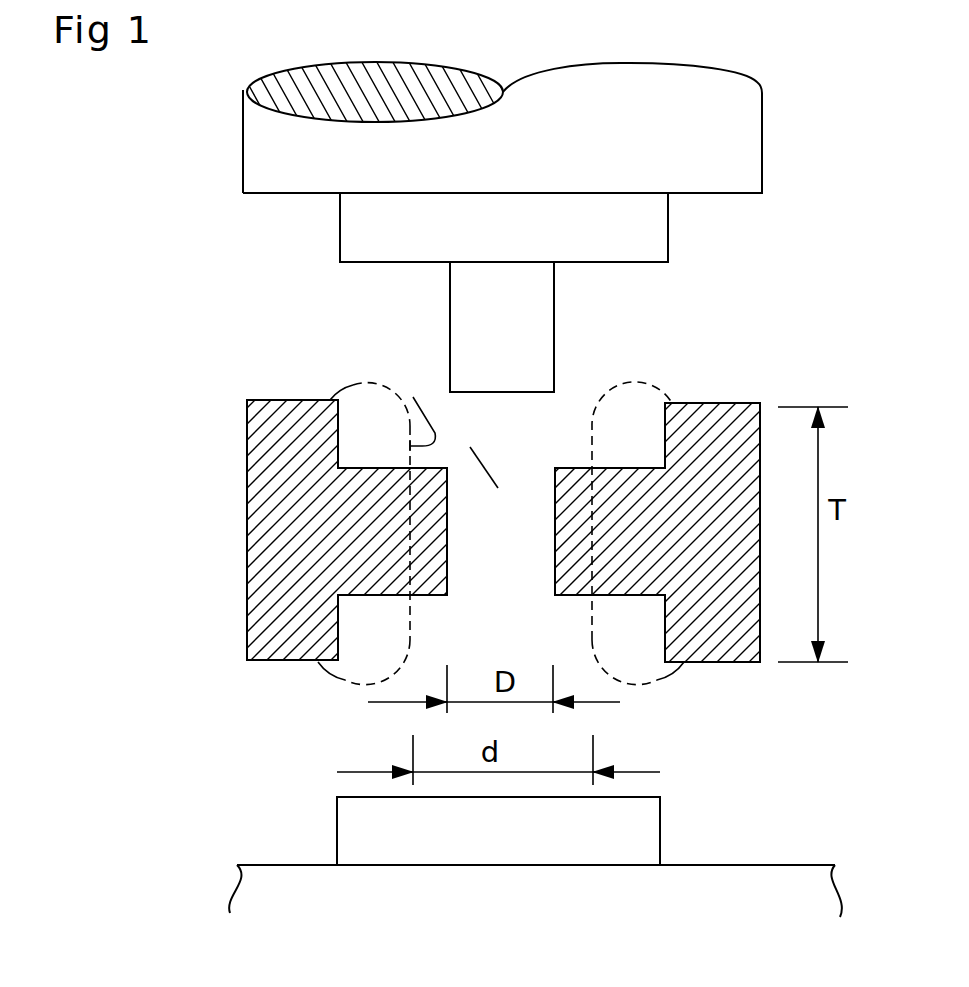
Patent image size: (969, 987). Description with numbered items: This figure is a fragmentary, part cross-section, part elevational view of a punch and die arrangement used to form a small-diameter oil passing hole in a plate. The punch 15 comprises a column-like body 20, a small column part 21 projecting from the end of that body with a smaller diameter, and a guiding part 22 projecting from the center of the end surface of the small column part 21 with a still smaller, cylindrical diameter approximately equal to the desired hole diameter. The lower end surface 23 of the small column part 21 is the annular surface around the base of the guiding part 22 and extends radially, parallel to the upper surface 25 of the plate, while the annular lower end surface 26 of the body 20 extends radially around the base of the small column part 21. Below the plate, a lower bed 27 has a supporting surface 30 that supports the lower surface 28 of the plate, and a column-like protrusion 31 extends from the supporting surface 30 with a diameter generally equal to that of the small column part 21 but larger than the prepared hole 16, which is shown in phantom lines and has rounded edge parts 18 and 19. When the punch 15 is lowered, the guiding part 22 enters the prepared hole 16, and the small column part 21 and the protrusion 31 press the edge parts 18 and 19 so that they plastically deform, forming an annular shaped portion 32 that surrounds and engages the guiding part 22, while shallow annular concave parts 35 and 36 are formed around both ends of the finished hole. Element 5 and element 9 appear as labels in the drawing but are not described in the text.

The punch 15 is at (486, 224).
The column-like body 20 is at (735, 160).
The small column part 21 is at (650, 222).
The guiding part 22 is at (532, 328).
The annular lower end surface of the punch body 26 is at (308, 196).
The lower end surface of the small column part 23 is at (390, 258).
The die 5 is at (484, 532).
The annular shaped portion 32 is at (380, 526).
The upper surface of the plate 25 is at (725, 402).
The lower surface of the plate 28 is at (718, 663).
The edge part 18 is at (350, 385).
The edge part 19 is at (375, 645).
The concave part 35 is at (630, 465).
The concave part 36 is at (615, 597).
The prepared hole 16 is at (410, 400).
The pin 9 is at (470, 447).
The lower bed 27 is at (484, 853).
The column-like protrusion 31 is at (370, 825).
The supporting surface 30 is at (745, 866).